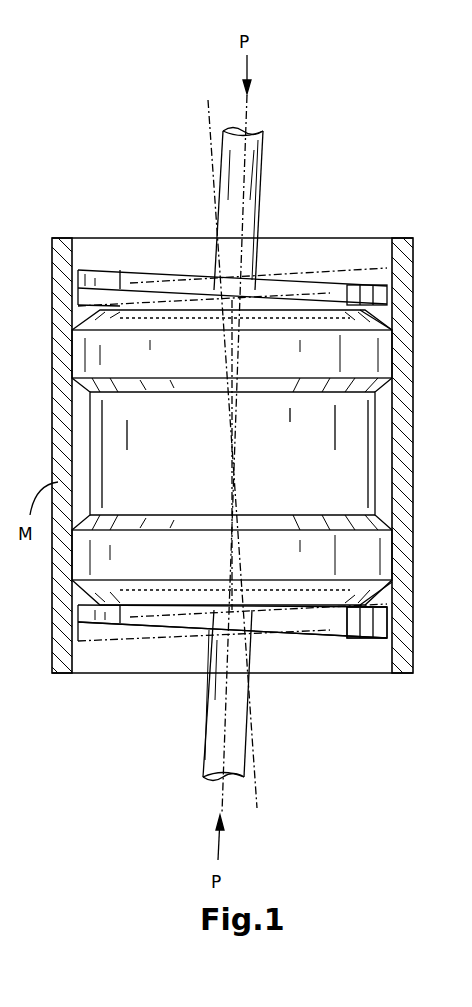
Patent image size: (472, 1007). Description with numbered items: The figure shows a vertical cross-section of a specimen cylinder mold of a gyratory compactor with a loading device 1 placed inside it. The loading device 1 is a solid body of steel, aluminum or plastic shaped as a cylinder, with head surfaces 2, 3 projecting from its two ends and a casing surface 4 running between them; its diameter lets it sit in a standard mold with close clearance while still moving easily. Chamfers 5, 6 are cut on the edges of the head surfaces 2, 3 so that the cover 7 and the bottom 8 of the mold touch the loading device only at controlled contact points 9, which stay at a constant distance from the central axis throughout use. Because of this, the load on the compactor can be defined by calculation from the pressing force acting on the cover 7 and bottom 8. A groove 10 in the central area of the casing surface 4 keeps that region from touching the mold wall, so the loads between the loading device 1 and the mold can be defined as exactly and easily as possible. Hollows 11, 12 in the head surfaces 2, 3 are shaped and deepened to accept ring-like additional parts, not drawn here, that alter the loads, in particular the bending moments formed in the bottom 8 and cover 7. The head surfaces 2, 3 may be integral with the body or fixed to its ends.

The loading device 1 is at (110, 352).
The head surface 2 is at (122, 303).
The head surface 3 is at (273, 607).
The casing surface 4 is at (363, 551).
The chamfer 5 is at (385, 326).
The chamfer 6 is at (395, 592).
The cover 7 is at (272, 292).
The bottom 8 is at (358, 623).
The contact points 9 is at (347, 300).
The groove 10 is at (383, 446).
The hollow 11 is at (163, 315).
The hollow 12 is at (173, 595).